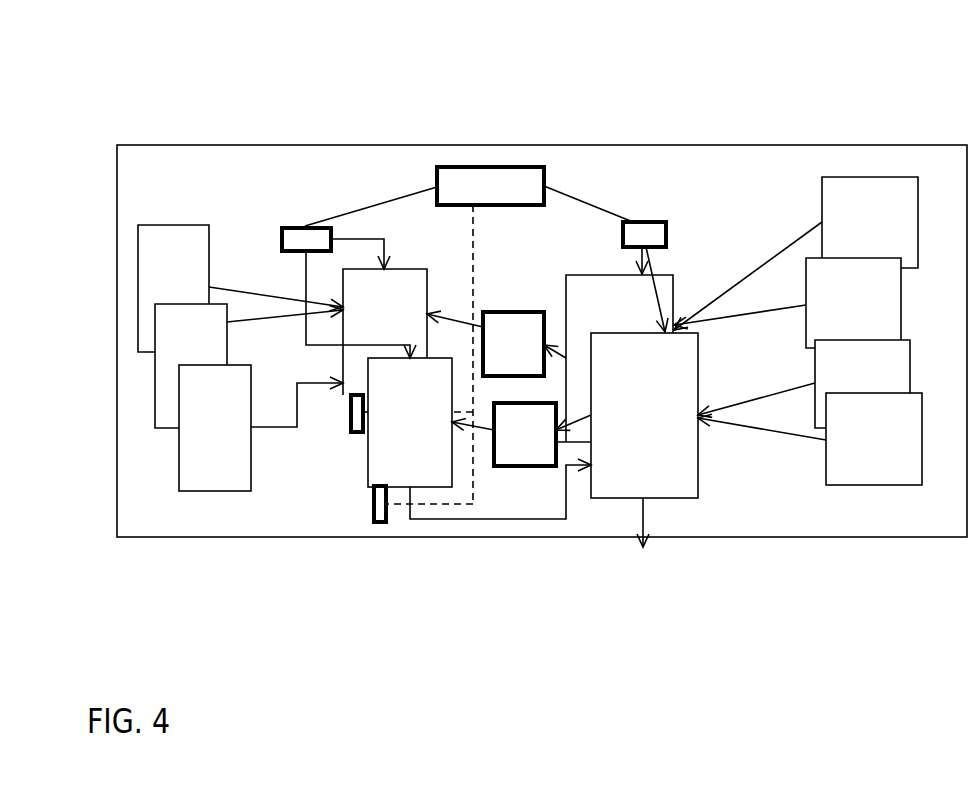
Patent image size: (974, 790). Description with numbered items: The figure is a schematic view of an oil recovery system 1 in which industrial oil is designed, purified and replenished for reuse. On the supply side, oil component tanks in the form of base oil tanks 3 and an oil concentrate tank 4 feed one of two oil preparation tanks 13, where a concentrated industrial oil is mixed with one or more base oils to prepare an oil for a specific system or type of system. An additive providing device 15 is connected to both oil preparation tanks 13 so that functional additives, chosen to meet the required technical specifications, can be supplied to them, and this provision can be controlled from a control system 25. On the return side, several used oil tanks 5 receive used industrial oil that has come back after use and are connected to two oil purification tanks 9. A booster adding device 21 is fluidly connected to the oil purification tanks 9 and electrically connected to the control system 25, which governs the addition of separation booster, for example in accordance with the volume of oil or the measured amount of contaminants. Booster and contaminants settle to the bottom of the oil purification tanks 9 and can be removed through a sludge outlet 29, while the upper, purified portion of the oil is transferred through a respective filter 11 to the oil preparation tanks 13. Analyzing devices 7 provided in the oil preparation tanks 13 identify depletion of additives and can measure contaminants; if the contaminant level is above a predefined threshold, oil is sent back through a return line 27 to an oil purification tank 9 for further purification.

The oil recovery system 1 is at (272, 145).
The base oil tank 3 is at (184, 291).
The oil concentrate tank 4 is at (203, 426).
The used oil tank 5 is at (859, 238).
The analyzing device 7 is at (352, 432).
The oil purification tank 9 is at (598, 323).
The filter 11 is at (492, 358).
The oil preparation tank 13 is at (360, 329).
The additive providing device 15 is at (296, 228).
The booster adding device 21 is at (666, 224).
The control system 25 is at (489, 167).
The return line 27 is at (537, 519).
The sludge outlet 29 is at (650, 537).